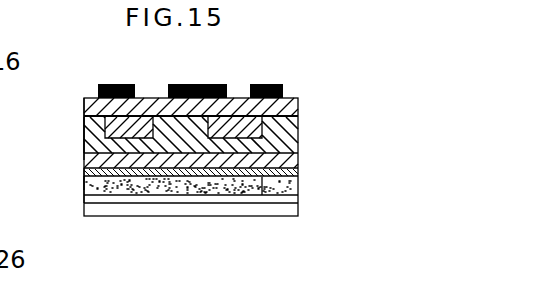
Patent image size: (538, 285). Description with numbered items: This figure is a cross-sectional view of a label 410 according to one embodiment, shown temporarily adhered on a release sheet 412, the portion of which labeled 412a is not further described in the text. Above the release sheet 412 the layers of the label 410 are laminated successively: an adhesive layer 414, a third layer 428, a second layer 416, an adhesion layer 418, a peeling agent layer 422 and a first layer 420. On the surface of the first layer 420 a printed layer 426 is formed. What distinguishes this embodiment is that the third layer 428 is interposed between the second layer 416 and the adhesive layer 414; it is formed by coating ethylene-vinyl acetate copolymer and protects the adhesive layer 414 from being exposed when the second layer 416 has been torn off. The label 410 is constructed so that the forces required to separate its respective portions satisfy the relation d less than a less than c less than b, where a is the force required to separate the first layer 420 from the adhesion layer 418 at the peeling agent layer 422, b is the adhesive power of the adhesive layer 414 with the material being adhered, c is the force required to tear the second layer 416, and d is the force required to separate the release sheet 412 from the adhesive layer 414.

The label 410 is at (383, 90).
The release sheet 412 is at (171, 212).
The surface of substrate 412a is at (230, 197).
The adhesive layer 414 is at (297, 184).
The second layer 416 is at (88, 162).
The adhesion layer 418 is at (297, 152).
The first layer 420 is at (297, 103).
The peeling agent layer 422 is at (297, 128).
The printed layer 426 is at (282, 85).
The third layer 428 is at (262, 177).
The force required to separate the first layer from the adhesion layer a is at (85, 150).
The adhesive power of the adhesive layer b is at (84, 181).
The force required to tear the second layer c is at (83, 157).
The force required to separate the release sheet from the adhesive layer d is at (84, 186).